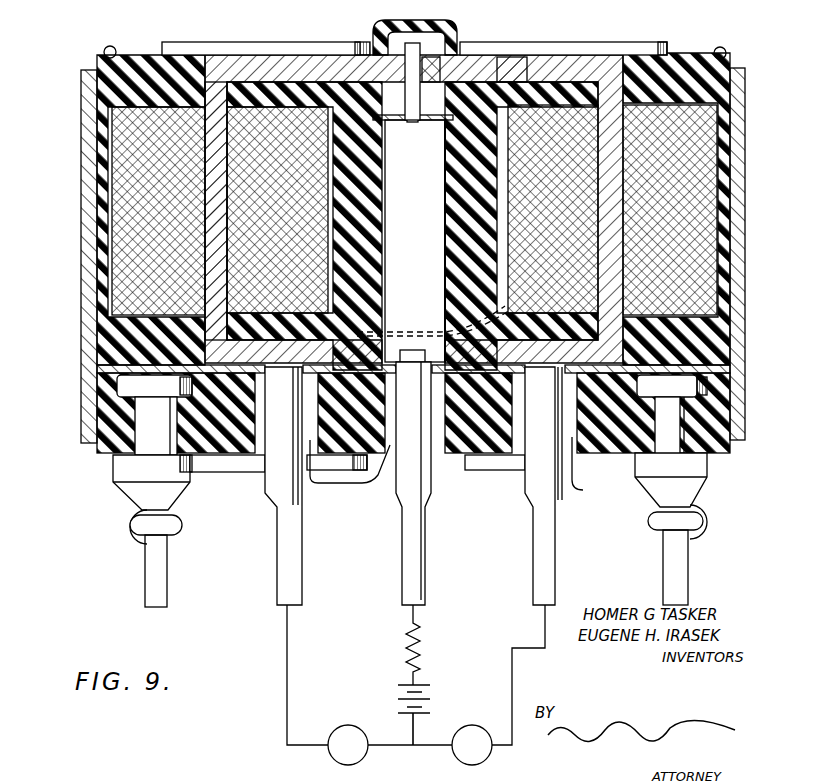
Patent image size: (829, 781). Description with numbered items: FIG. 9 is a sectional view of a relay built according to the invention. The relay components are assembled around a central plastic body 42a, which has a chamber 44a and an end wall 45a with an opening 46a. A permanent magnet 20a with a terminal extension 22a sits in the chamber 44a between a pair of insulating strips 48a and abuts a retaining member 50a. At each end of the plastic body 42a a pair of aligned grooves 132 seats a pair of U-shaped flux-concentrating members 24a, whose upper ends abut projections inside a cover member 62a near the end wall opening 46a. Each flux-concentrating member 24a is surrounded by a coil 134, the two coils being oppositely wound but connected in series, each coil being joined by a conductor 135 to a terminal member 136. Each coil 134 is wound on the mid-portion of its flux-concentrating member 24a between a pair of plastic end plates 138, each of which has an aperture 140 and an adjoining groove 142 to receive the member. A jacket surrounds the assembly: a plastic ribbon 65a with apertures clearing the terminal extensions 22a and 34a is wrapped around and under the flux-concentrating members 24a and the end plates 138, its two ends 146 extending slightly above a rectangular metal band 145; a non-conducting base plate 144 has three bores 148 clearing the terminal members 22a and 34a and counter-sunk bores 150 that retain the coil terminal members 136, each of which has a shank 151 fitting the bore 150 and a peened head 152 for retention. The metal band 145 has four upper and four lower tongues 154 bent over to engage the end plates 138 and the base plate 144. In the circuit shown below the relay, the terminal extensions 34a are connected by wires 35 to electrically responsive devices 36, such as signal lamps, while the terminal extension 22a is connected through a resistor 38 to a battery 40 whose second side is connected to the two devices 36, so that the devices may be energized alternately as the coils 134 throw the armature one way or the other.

The permanent magnet 20a is at (412, 352).
The terminal extension 22a is at (425, 557).
The flux-concentrating member 24a is at (208, 227).
The terminal extension 34a is at (290, 562).
The wire 35 is at (287, 662).
The electrically responsive device 36 is at (350, 733).
The resistor 38 is at (420, 645).
The battery 40 is at (430, 688).
The central plastic body 42a is at (515, 62).
The chamber 44a is at (445, 233).
The end wall 45a is at (445, 58).
The opening 46a is at (412, 123).
The insulating strip 48a is at (440, 314).
The retaining member 50a is at (443, 123).
The cover member 62a is at (392, 20).
The plastic ribbon 65a is at (745, 215).
The groove 132 is at (350, 90).
The coil 134 is at (130, 263).
The conductor 135 is at (133, 525).
The terminal member 136 is at (157, 575).
The end plate 138 is at (140, 55).
The aperture 140 is at (205, 92).
The groove 142 is at (282, 57).
The base plate 144 is at (110, 440).
The rectangular metal band 145 is at (90, 167).
The ribbon end 146 is at (110, 46).
The bore 148 is at (461, 470).
The counter-sunk bore 150 is at (142, 450).
The shank 151 is at (140, 412).
The peened head 152 is at (120, 392).
The tongue 154 is at (222, 42).